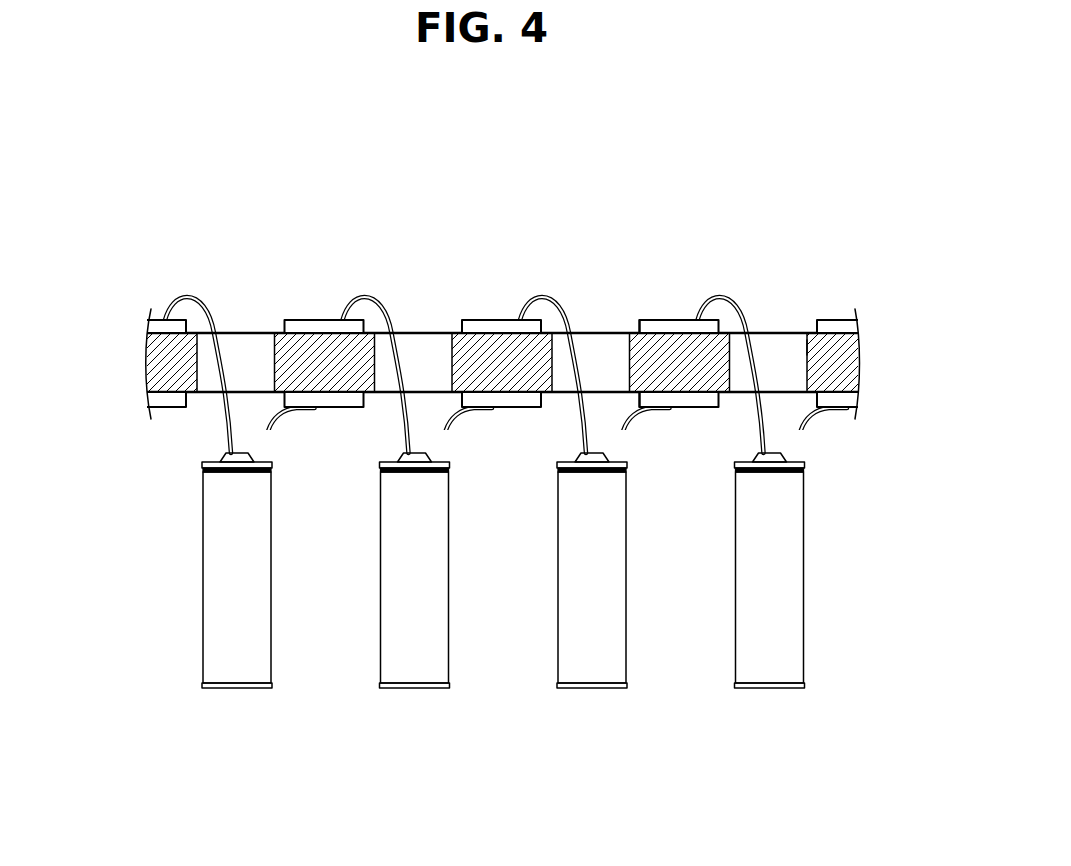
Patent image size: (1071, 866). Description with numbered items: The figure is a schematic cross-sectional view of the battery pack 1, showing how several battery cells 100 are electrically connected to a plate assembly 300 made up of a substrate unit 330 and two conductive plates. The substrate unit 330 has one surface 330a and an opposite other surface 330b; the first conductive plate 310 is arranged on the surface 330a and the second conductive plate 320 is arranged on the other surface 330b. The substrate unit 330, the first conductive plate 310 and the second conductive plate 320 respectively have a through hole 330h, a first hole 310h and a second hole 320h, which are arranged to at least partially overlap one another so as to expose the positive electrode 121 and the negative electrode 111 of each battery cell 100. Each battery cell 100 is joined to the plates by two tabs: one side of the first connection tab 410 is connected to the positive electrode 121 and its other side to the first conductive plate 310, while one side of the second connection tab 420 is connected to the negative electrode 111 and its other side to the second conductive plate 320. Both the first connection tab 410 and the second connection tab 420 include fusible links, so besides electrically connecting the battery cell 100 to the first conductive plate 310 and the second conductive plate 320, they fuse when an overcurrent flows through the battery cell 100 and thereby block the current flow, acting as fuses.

The battery pack 1 is at (829, 115).
The battery cell 100 is at (235, 688).
The negative electrode 111 is at (270, 456).
The positive electrode 121 is at (221, 454).
The bus bar assembly 300 is at (748, 243).
The first conductive plate 310 is at (845, 327).
The first hole 310h is at (641, 325).
The second conductive plate 320 is at (848, 397).
The second hole 320h is at (643, 403).
The substrate unit 330 is at (67, 313).
The one surface 330a is at (148, 332).
The other surface 330b is at (150, 400).
The through hole 330h is at (808, 347).
The first connection tab 410 is at (195, 298).
The second connection tab 420 is at (272, 427).